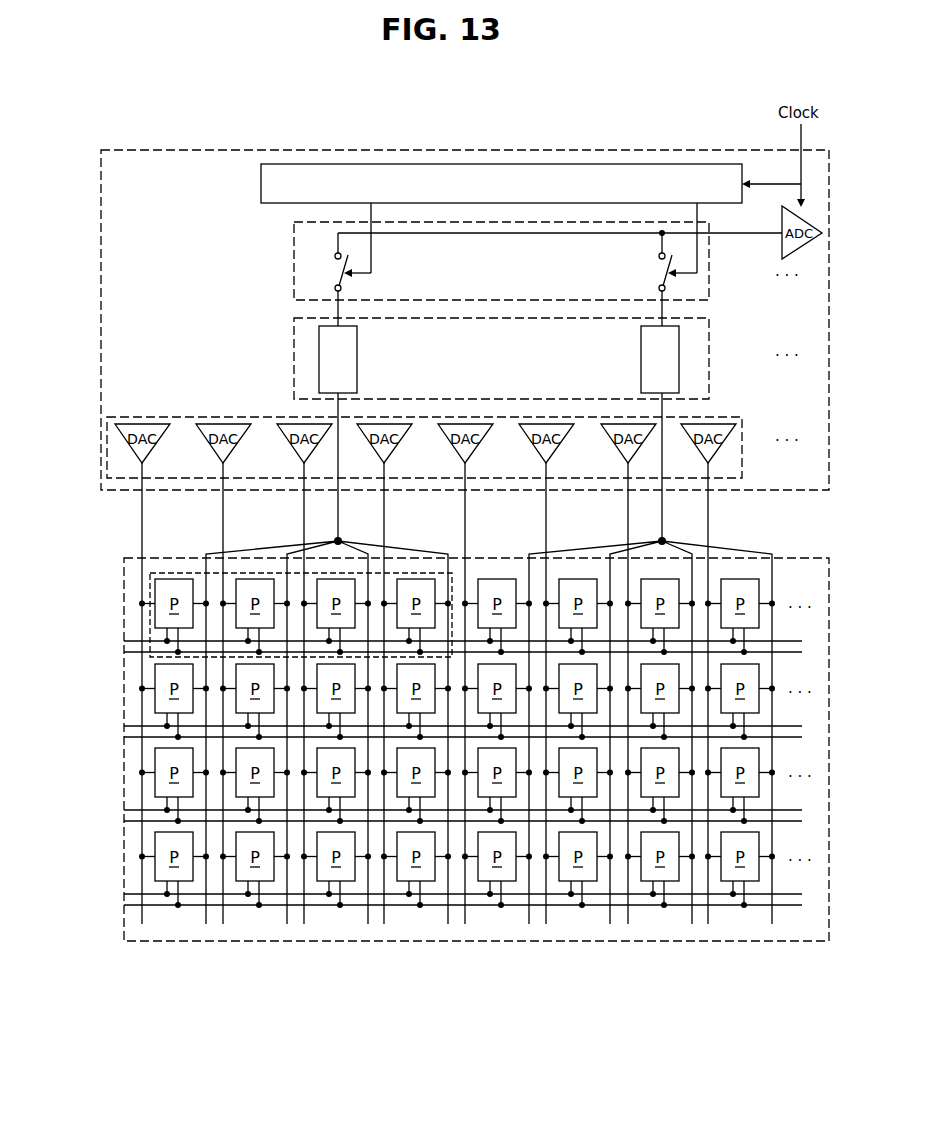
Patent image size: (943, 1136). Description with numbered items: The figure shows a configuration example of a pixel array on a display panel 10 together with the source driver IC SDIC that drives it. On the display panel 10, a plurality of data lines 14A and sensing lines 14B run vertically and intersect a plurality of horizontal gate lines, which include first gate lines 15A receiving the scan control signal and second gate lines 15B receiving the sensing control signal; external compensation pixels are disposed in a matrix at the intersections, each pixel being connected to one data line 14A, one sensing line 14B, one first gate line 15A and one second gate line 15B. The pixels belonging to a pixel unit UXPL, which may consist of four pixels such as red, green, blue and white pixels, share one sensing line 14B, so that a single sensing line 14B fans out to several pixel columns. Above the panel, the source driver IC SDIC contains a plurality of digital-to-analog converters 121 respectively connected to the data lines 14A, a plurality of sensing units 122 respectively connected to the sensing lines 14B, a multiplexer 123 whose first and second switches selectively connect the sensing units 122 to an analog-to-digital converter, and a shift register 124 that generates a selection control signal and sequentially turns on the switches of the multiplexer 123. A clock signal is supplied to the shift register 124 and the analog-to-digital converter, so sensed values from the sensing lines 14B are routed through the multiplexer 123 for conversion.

The display panel 10 is at (478, 941).
The data lines 14A is at (441, 693).
The sensing lines 14B is at (489, 658).
The first gate lines 15A is at (429, 766).
The second gate lines 15B is at (429, 785).
The digital-to-analog converters 121 is at (107, 445).
The sensing units 122 is at (294, 350).
The multiplexer 123 is at (294, 260).
The shift register 124 is at (440, 164).
The source driver IC SDIC is at (286, 150).
The pixel unit UXPL is at (150, 583).